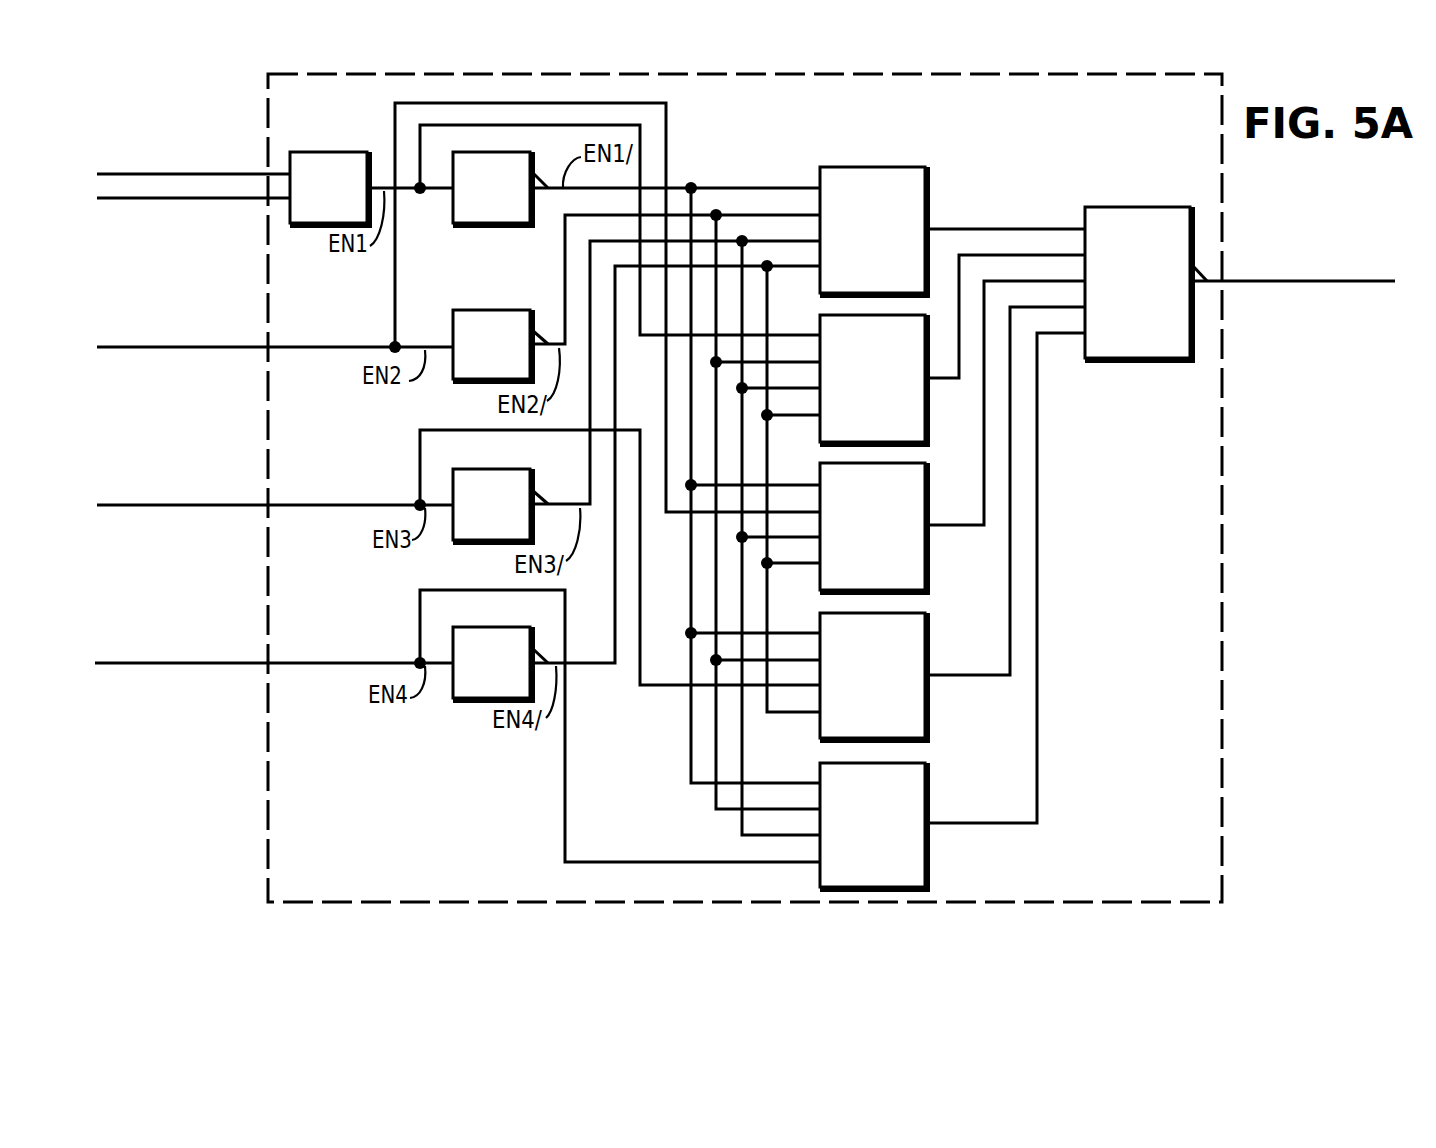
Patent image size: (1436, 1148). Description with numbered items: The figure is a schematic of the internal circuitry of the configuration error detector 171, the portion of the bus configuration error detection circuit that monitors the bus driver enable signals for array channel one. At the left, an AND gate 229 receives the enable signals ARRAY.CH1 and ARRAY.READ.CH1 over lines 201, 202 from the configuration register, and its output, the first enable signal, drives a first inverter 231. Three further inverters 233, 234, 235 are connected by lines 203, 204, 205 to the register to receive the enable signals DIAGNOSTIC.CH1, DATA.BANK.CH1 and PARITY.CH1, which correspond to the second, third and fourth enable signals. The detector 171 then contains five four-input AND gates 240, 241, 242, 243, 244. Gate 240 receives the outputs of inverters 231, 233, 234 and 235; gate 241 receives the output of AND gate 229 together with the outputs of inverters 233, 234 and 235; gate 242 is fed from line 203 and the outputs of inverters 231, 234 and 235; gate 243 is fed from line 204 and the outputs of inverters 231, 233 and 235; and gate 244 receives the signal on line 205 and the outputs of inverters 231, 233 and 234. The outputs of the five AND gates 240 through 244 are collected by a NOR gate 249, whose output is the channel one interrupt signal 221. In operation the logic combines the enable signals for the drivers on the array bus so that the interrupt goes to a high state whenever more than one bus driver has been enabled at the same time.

The configuration error detector 171 is at (1222, 650).
The line 201 is at (122, 174).
The line 202 is at (135, 198).
The line 203 is at (122, 347).
The line 204 is at (125, 505).
The line 205 is at (122, 663).
The channel one interrupt signal 221 is at (1240, 282).
The AND gate 229 is at (299, 152).
The first inverter 231 is at (469, 225).
The inverter 233 is at (469, 381).
The inverter 234 is at (470, 542).
The inverter 235 is at (468, 700).
The four-input AND gate 240 is at (890, 167).
The four-input AND gate 241 is at (925, 444).
The four-input AND gate 242 is at (925, 592).
The four-input AND gate 243 is at (925, 738).
The four-input AND gate 244 is at (925, 852).
The NOR gate 249 is at (1146, 360).